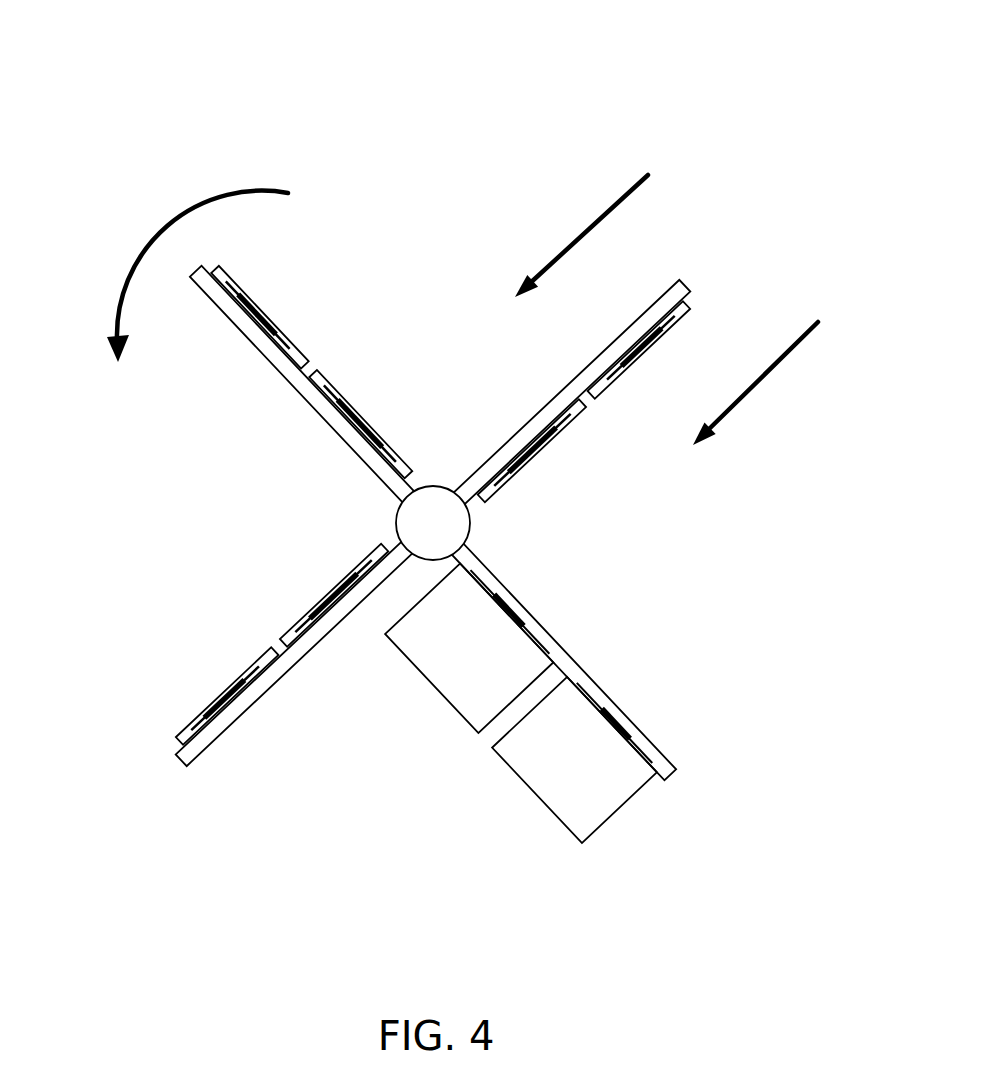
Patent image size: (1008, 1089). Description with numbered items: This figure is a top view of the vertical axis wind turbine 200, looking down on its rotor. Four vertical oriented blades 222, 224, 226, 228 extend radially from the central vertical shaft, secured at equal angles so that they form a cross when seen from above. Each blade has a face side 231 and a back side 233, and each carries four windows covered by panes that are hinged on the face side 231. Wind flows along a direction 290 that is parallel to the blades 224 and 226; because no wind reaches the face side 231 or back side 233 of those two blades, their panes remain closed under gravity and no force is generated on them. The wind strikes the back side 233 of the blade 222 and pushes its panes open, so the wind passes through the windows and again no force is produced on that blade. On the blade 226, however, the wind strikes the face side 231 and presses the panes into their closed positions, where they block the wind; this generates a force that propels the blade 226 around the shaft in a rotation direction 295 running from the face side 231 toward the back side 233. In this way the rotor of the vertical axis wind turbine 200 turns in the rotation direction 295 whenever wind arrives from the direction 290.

The vertical axis wind turbine 200 is at (406, 31).
The vertical oriented blade 222 is at (585, 683).
The vertical oriented blade 224 is at (590, 377).
The vertical oriented blade 226 is at (372, 457).
The vertical oriented blade 228 is at (285, 657).
The face side 231 is at (309, 357).
The back side 233 is at (337, 435).
The wind flow direction 290 is at (687, 292).
The rotation direction 295 is at (229, 269).